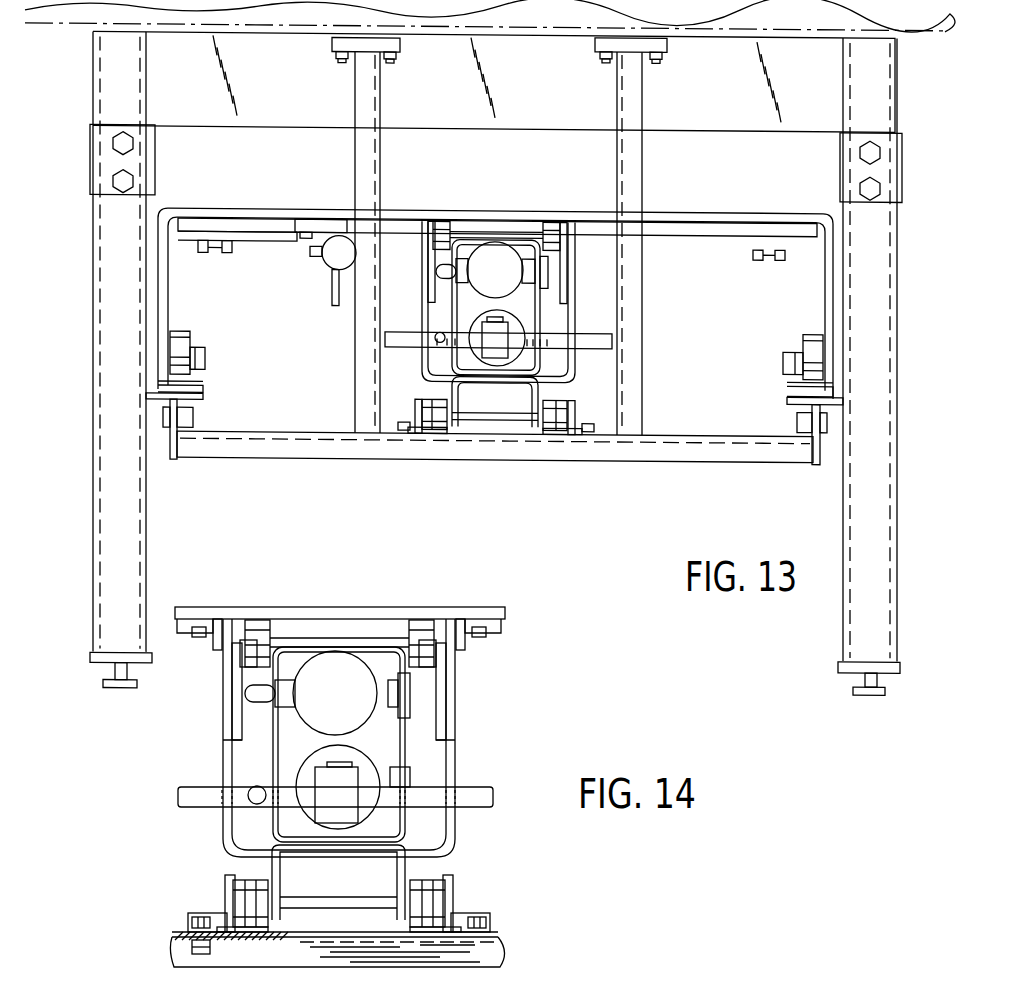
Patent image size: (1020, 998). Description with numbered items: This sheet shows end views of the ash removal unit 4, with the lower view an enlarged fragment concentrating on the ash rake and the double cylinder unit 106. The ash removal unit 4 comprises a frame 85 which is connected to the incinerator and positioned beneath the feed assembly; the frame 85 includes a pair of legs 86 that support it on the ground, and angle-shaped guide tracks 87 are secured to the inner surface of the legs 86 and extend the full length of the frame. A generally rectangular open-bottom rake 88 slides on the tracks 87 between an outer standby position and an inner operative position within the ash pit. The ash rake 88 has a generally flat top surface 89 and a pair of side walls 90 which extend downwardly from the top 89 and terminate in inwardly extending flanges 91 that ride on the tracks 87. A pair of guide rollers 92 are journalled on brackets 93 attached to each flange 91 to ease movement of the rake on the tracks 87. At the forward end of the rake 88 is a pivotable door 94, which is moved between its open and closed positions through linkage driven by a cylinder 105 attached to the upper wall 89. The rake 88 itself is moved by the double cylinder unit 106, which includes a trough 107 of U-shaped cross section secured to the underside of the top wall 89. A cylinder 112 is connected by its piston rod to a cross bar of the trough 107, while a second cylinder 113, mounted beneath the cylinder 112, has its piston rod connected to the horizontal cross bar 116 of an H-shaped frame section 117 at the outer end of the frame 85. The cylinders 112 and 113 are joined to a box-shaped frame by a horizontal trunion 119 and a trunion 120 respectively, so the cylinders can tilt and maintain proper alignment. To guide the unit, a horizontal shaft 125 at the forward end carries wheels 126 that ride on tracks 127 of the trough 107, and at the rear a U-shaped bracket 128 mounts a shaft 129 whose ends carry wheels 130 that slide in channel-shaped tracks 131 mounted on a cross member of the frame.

In FIG. 13, the ash removal unit 4 is at (712, 470).
In FIG. 13, the frame 85 is at (899, 266).
In FIG. 13, the legs 86 is at (127, 494).
In FIG. 13, the guide tracks 87 is at (162, 401).
In FIG. 13, the rake 88 is at (716, 211).
In FIG. 14, the rake 88 is at (468, 607).
In FIG. 13, the top surface 89 is at (578, 218).
In FIG. 14, the top surface 89 is at (427, 610).
In FIG. 13, the side walls 90 is at (164, 273).
In FIG. 13, the flanges 91 is at (203, 384).
In FIG. 13, the guide rollers 92 is at (181, 333).
In FIG. 13, the brackets 93 is at (201, 351).
In FIG. 13, the pivotable door 94 is at (272, 238).
In FIG. 13, the cylinder 105 is at (340, 252).
In FIG. 13, the double cylinder unit 106 is at (496, 220).
In FIG. 14, the double cylinder unit 106 is at (458, 711).
In FIG. 13, the trough 107 is at (573, 310).
In FIG. 14, the trough 107 is at (223, 711).
In FIG. 13, the cylinder 112 is at (505, 283).
In FIG. 14, the cylinder 112 is at (345, 695).
In FIG. 13, the second cylinder 113 is at (476, 325).
In FIG. 14, the second cylinder 113 is at (320, 768).
In FIG. 13, the horizontal cross bar 116 is at (614, 339).
In FIG. 14, the horizontal cross bar 116 is at (200, 800).
In FIG. 13, the H-shaped frame section 117 is at (641, 389).
In FIG. 14, the trunion 119 is at (284, 690).
In FIG. 14, the trunion 120 is at (392, 776).
In FIG. 13, the horizontal shaft 125 is at (464, 233).
In FIG. 14, the horizontal shaft 125 is at (353, 640).
In FIG. 13, the wheels 126 is at (440, 222).
In FIG. 14, the wheels 126 is at (258, 621).
In FIG. 14, the tracks 127 is at (232, 673).
In FIG. 13, the U-shaped bracket 128 is at (452, 393).
In FIG. 14, the U-shaped bracket 128 is at (273, 860).
In FIG. 13, the shaft 129 is at (505, 431).
In FIG. 14, the shaft 129 is at (345, 905).
In FIG. 13, the wheels 130 is at (437, 433).
In FIG. 14, the wheels 130 is at (250, 893).
In FIG. 13, the channel-shaped tracks 131 is at (581, 413).
In FIG. 14, the channel-shaped tracks 131 is at (228, 895).